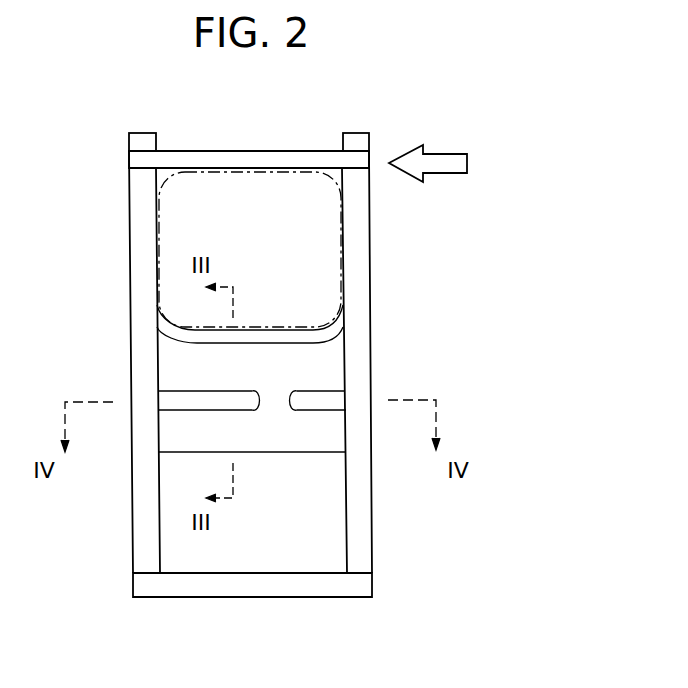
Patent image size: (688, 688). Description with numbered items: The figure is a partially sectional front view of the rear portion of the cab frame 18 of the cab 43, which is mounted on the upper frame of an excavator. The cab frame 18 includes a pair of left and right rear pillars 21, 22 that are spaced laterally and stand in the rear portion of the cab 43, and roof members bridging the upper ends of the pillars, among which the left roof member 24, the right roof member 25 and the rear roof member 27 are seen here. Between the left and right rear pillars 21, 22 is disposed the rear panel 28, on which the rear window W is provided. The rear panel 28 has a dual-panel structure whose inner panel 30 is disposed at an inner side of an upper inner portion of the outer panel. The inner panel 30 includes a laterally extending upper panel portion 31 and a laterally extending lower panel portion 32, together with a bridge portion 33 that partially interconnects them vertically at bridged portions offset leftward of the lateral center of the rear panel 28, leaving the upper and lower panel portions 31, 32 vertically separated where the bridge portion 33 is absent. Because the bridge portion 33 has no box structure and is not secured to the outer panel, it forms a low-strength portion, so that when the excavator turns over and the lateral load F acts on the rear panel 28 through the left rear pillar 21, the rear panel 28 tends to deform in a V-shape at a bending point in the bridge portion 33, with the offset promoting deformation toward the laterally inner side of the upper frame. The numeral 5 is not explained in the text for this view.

The base 5 is at (273, 597).
The cab frame 18 is at (240, 374).
The left rear pillar 21 is at (371, 333).
The right rear pillar 22 is at (130, 342).
The left roof member 24 is at (355, 133).
The right roof member 25 is at (141, 133).
The rear roof member 27 is at (222, 151).
The rear panel 28 is at (262, 343).
The inner panel 30 is at (271, 440).
The upper panel portion 31 is at (330, 368).
The lower panel portion 32 is at (168, 425).
The bridge portion 33 is at (273, 402).
The cab 43 is at (424, 526).
The rear window W is at (270, 172).
The lateral load F is at (443, 160).